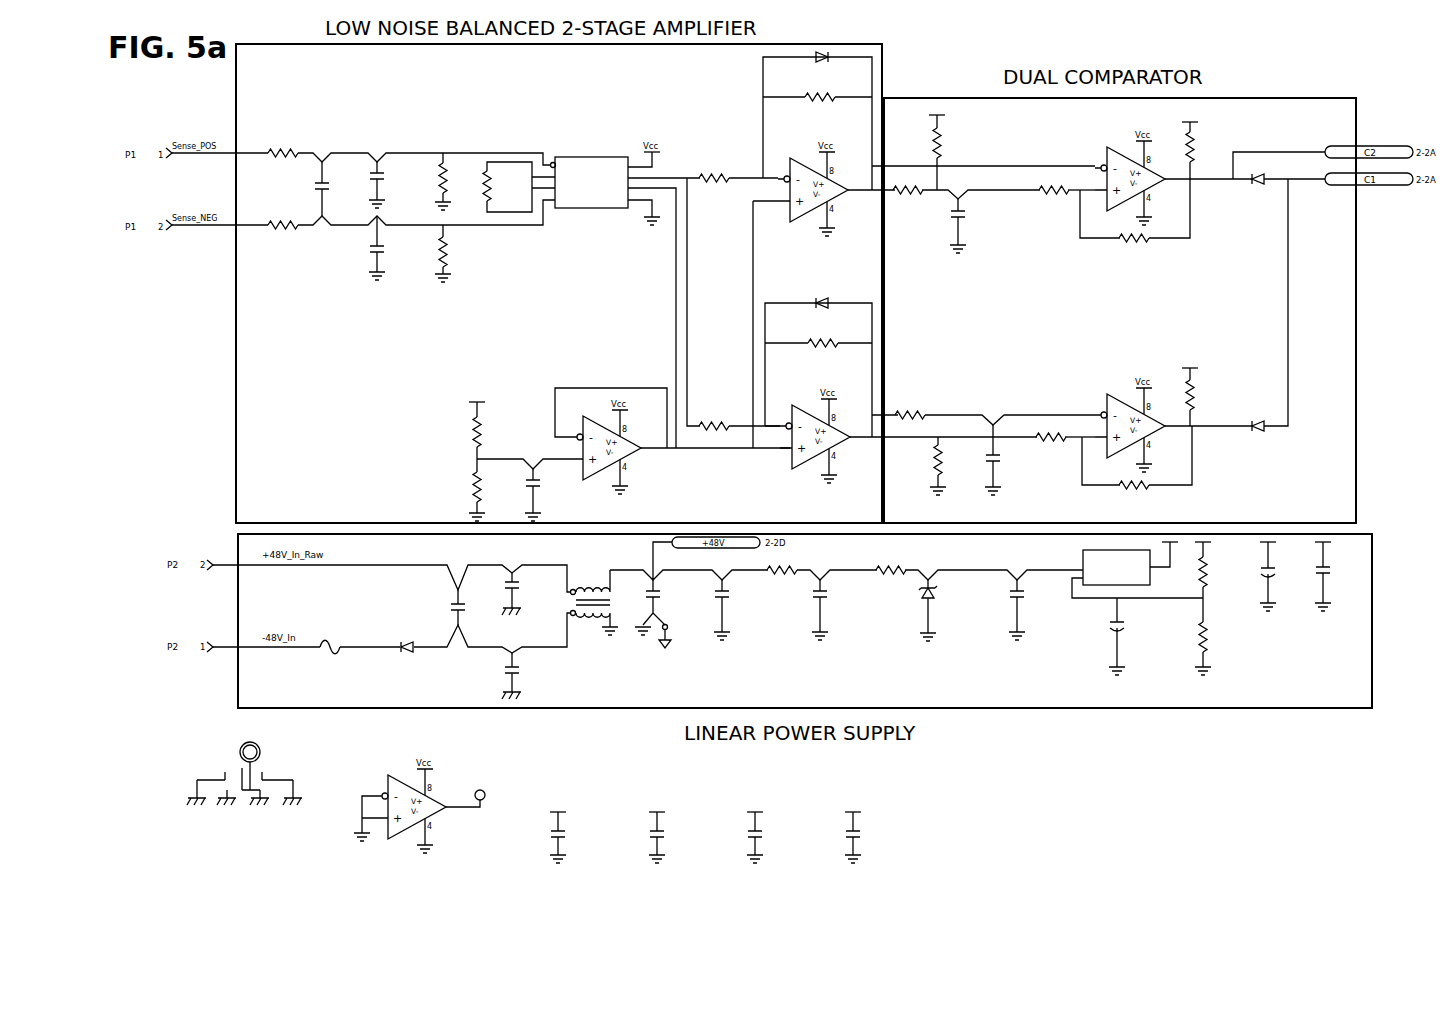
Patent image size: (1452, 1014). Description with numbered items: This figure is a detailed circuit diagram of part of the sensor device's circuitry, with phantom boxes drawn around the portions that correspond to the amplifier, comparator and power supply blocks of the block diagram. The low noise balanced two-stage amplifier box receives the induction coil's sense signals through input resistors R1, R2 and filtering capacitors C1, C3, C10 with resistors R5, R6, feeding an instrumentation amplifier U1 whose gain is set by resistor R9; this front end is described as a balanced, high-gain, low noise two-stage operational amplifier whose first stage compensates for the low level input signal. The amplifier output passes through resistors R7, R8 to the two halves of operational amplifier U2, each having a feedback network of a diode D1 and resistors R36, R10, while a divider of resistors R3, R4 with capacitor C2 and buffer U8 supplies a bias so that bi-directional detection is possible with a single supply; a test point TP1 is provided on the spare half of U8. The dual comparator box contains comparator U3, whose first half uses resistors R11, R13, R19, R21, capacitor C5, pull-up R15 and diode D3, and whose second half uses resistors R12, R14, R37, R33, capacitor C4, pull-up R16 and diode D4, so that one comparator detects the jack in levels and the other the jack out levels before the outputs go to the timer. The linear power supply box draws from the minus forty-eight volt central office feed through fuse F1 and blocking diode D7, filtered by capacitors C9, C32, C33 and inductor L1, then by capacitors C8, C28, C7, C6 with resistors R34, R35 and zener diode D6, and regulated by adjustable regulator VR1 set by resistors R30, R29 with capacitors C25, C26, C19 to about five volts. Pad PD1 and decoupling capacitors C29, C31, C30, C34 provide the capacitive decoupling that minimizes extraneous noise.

The input resistor 3.92k R1 is at (284, 139).
The input resistor 3.92k R2 is at (284, 239).
The capacitor 0.047uF C1 is at (342, 189).
The capacitor 1000pF C3 is at (396, 181).
The capacitor 1000pF C10 is at (396, 248).
The resistor 100k R5 is at (457, 181).
The resistor 100k R6 is at (457, 253).
The gain resistor 150 R9 is at (519, 187).
The instrumentation amplifier AD623 U1 is at (590, 182).
The resistor 20k R7 is at (736, 192).
The resistor 20k R8 is at (736, 412).
The operational amplifier LM6042 U2 is at (895, 308).
The diode MMBD914 D1 is at (929, 241).
The feedback resistor 121k R36 is at (817, 110).
The feedback resistor 121k R10 is at (818, 356).
The resistor 20k R3 is at (493, 425).
The resistor 20k R4 is at (493, 490).
The capacitor 0.1uF C2 is at (547, 492).
The operational amplifier OPA2234 U8 is at (572, 620).
The test point TP1 is at (489, 800).
The resistor 221k R11 is at (965, 202).
The resistor 511k R13 is at (951, 147).
The capacitor 0.22uF C5 is at (975, 223).
The resistor 10k R19 is at (1064, 202).
The hysteresis resistor 10M R21 is at (1135, 224).
The dual comparator LM393 U3 is at (1169, 296).
The pull-up resistor 20k R15 is at (1206, 145).
The diode MMBD914 D3 is at (1273, 181).
The diode MMBD914 D4 is at (1272, 317).
The resistor 221k R12 is at (995, 405).
The resistor 511k R14 is at (953, 466).
The capacitor 0.22uF C4 is at (1009, 460).
The resistor 10k R37 is at (1065, 449).
The hysteresis resistor 10M R33 is at (1137, 471).
The pull-up resistor 20k R16 is at (1206, 391).
The fuse 0.25A F1 is at (338, 664).
The rectifier diode MURS320T3 D7 is at (425, 657).
The capacitor 0.01uF C9 is at (474, 609).
The capacitor 0.01uF C32 is at (528, 589).
The capacitor 0.01uF C33 is at (528, 674).
The transformer/inductor 80mH L1 is at (603, 602).
The capacitor 0.01uF C8 is at (668, 613).
The capacitor 1uF C28 is at (735, 610).
The resistor 1k R34 is at (782, 582).
The capacitor 0.01uF C7 is at (837, 610).
The resistor 1k R35 is at (889, 582).
The zener diode MMBZ5237 D6 is at (959, 609).
The capacitor 0.22uF C6 is at (1034, 610).
The voltage regulator LM317 VR1 is at (1137, 564).
The capacitor 4.7uF C25 is at (1128, 636).
The resistor 953 R30 is at (1220, 564).
The resistor 2.67k R29 is at (1220, 636).
The capacitor 4.7uF C26 is at (1280, 571).
The capacitor 0.1uF C19 is at (1336, 571).
The pad/connector 300_125NP PD1 is at (237, 765).
The decoupling capacitor 0.1uF C29 is at (566, 839).
The decoupling capacitor 0.01uF C31 is at (667, 839).
The decoupling capacitor 0.01uF C30 is at (765, 839).
The decoupling capacitor 0.01uF C34 is at (863, 839).